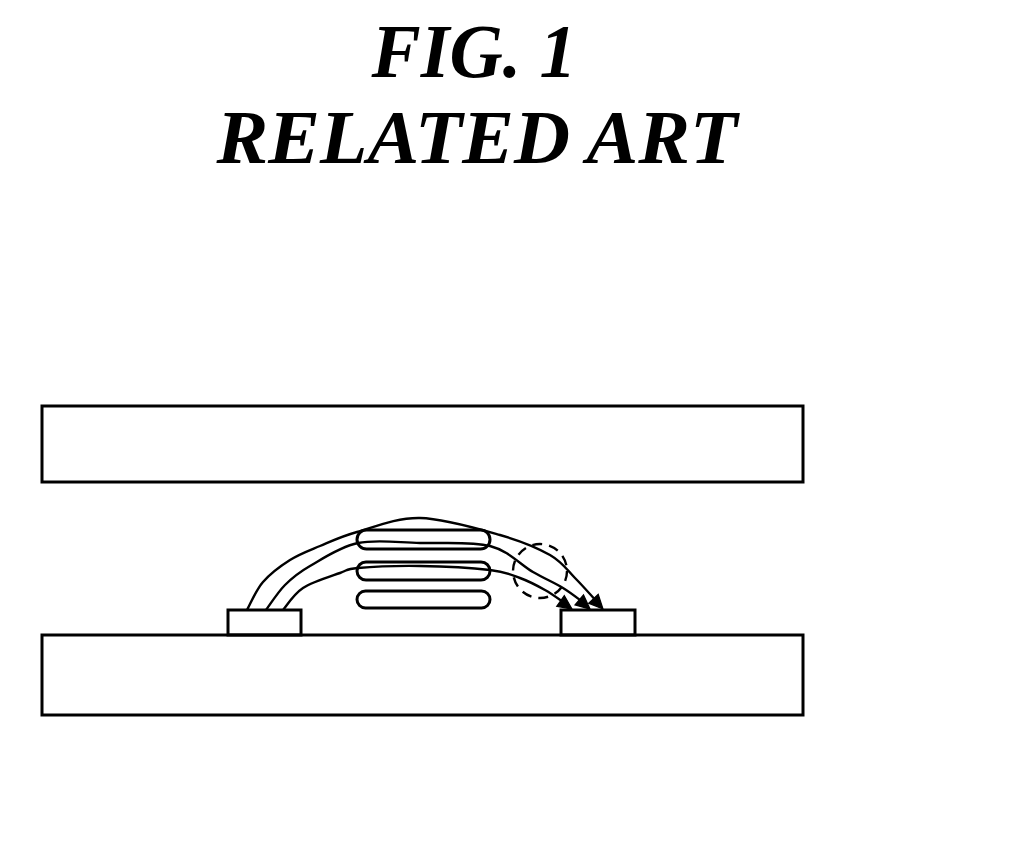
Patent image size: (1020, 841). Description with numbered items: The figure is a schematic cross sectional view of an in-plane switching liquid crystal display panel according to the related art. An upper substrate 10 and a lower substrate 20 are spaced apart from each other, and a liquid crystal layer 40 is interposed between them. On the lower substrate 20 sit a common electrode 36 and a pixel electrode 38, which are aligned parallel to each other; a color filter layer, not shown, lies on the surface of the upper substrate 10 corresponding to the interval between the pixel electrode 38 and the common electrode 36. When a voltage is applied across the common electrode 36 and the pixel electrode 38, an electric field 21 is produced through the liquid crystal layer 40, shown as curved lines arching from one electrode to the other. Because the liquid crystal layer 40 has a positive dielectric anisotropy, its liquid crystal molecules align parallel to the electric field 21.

The upper substrate 10 is at (840, 400).
The lower substrate 20 is at (840, 633).
The liquid crystal layer 40 is at (840, 485).
The common electrode 36 is at (259, 627).
The pixel electrode 38 is at (608, 622).
The electric field 21 is at (520, 592).